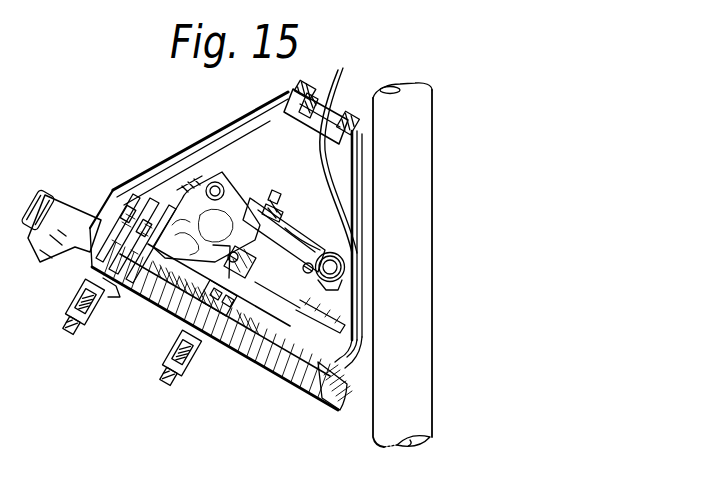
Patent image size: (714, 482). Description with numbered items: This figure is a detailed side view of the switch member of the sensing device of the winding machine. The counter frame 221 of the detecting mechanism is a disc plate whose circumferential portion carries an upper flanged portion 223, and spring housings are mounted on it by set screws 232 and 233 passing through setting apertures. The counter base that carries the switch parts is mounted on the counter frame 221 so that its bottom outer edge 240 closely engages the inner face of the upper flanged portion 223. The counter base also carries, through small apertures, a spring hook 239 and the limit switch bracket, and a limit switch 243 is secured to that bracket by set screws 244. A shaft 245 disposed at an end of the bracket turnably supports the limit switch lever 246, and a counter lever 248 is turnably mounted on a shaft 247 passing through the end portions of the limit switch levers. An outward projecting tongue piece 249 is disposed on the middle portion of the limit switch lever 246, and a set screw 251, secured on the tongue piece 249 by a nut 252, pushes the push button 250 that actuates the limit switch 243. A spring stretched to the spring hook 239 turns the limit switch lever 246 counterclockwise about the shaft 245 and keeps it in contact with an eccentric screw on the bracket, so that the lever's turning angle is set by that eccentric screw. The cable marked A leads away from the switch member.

The counter frame 221 is at (262, 366).
The flanged portion 223 is at (347, 388).
The set screw 232 is at (90, 322).
The set screw 233 is at (215, 353).
The spring hook 239 is at (117, 294).
The bottom outer edge 240 is at (350, 361).
The limit switch 243 is at (291, 275).
The set screws 244 is at (158, 306).
The shaft 245 is at (345, 266).
The limit switch lever 246 is at (248, 202).
The shaft 247 is at (217, 189).
The counter lever 248 is at (202, 182).
The tongue piece 249 is at (268, 222).
The push button 250 is at (298, 233).
The set screw 251 is at (276, 189).
The nut 252 is at (281, 201).
The cable A is at (352, 82).